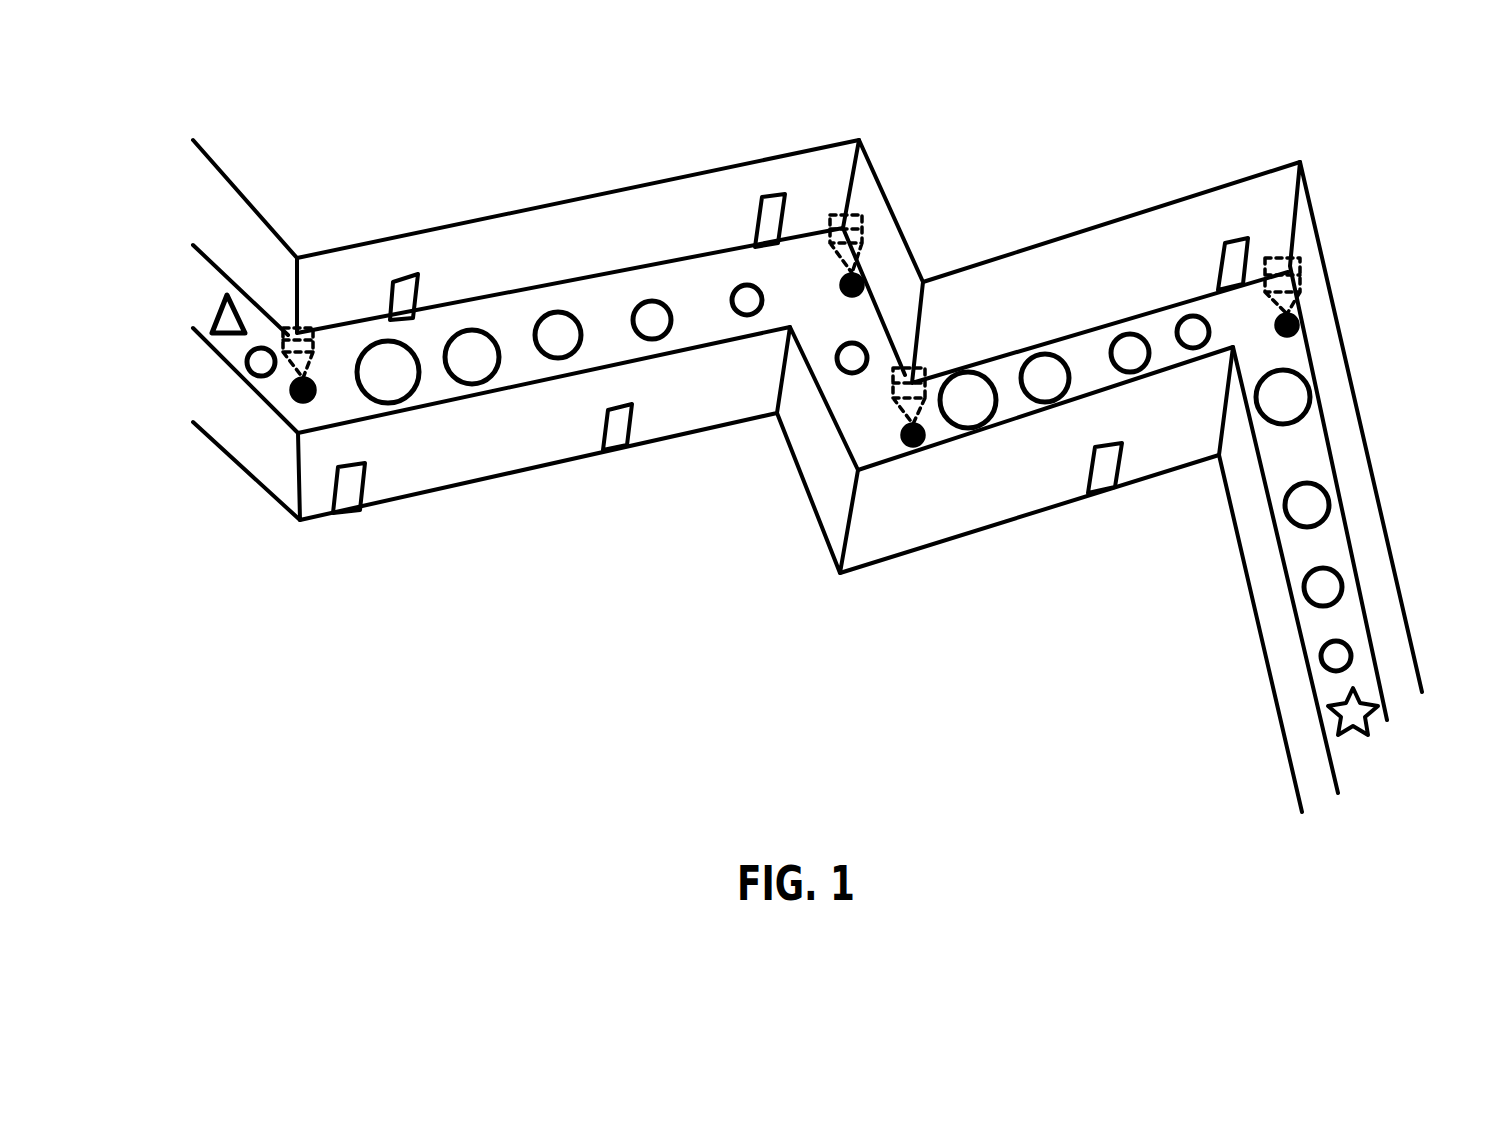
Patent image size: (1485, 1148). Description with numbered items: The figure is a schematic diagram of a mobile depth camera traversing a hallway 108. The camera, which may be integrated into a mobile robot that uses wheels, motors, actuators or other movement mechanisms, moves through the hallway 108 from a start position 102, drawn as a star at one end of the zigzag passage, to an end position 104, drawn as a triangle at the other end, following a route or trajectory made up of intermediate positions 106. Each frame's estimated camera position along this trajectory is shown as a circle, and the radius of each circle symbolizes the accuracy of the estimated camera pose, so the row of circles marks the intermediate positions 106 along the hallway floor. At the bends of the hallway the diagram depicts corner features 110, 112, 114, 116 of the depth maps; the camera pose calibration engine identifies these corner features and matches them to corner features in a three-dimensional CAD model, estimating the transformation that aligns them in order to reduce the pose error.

The start position 102 is at (1357, 737).
The end position 104 is at (207, 318).
The intermediate positions 106 is at (1353, 650).
The hallway 108 is at (725, 165).
The corner feature 110 is at (1302, 273).
The corner feature 112 is at (927, 368).
The corner feature 114 is at (870, 216).
The corner feature 116 is at (353, 303).